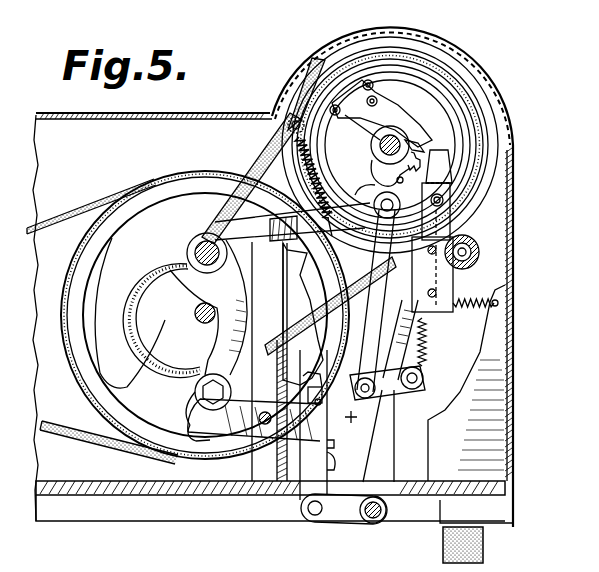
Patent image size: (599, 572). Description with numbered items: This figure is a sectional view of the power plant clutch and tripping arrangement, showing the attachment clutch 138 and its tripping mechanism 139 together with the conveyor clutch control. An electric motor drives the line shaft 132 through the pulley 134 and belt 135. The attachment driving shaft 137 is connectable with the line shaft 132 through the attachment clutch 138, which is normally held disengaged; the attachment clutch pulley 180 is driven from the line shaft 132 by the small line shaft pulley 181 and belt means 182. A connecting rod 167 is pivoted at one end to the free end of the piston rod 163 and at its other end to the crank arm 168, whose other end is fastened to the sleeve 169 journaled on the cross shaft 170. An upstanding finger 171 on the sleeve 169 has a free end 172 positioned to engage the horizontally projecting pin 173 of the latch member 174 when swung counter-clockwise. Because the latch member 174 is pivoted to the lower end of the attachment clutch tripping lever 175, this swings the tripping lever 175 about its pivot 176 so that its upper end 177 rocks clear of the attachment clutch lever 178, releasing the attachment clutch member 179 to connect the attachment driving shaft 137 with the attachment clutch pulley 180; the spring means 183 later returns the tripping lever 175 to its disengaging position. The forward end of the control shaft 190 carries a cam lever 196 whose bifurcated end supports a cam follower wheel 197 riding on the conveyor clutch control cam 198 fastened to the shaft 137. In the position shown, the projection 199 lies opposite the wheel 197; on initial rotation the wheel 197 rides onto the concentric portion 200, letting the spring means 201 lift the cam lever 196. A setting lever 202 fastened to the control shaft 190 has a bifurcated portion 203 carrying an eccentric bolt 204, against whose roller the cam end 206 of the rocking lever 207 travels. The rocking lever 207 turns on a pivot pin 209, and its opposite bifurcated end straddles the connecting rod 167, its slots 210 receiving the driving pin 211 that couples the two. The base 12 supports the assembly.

The base 12 is at (191, 565).
The line shaft 132 is at (197, 317).
The pulley 134 is at (84, 390).
The belt 135 is at (72, 423).
The attachment driving shaft 137 is at (378, 149).
The attachment clutch 138 is at (520, 55).
The tripping mechanism 139 is at (535, 224).
The piston rod 163 is at (310, 387).
The connecting rod 167 is at (297, 494).
The crank arm 168 is at (340, 519).
The sleeve 169 is at (380, 525).
The cross shaft 170 is at (381, 521).
The upstanding finger 171 is at (388, 482).
The free end of the finger 172 is at (396, 404).
The horizontally projecting pin 173 is at (374, 373).
The latch member 174 is at (352, 420).
The attachment clutch tripping lever 175 is at (424, 318).
The pivot 176 is at (443, 200).
The upper end of the tripping lever 177 is at (440, 172).
The attachment clutch lever 178 is at (392, 102).
The attachment clutch member 179 is at (462, 137).
The attachment clutch pulley 180 is at (432, 72).
The small line shaft pulley 181 is at (167, 313).
The belt means 182 is at (250, 155).
The spring means 183 is at (495, 290).
The control shaft 190 is at (157, 277).
The cam lever 196 is at (303, 314).
The cam follower wheel 197 is at (362, 228).
The conveyor clutch control cam 198 is at (378, 165).
The projection 199 is at (386, 172).
The concentric portion 200 is at (418, 143).
The spring means 201 is at (298, 165).
The setting lever 202 is at (206, 347).
The bifurcated portion 203 is at (200, 413).
The bolt 204 is at (203, 392).
The cam end 206 is at (196, 432).
The rocking lever 207 is at (227, 430).
The pivot pin 209 is at (265, 425).
The slot 210 is at (334, 460).
The driving pin 211 is at (334, 444).